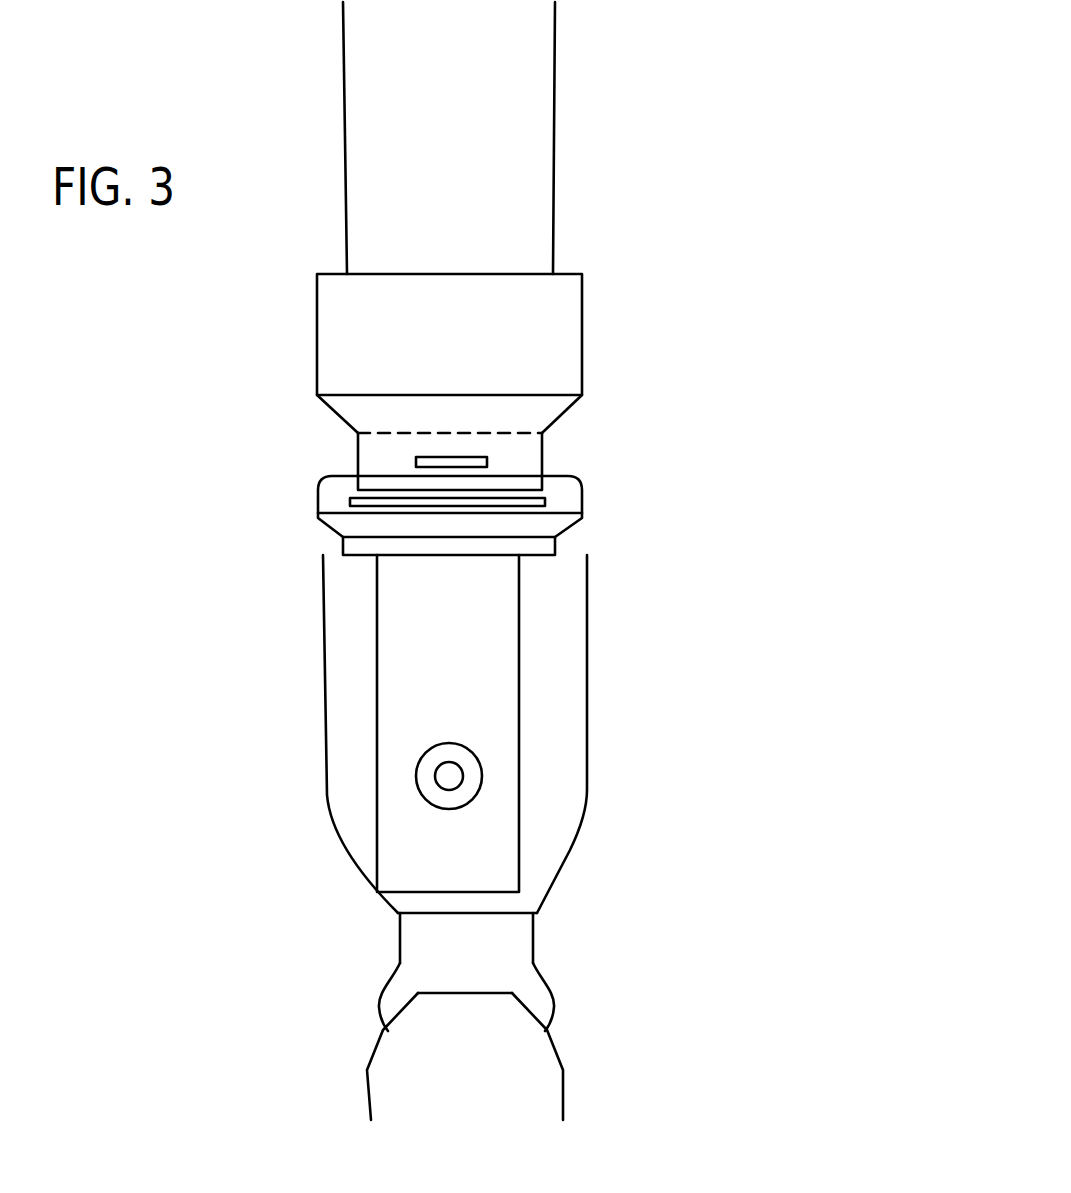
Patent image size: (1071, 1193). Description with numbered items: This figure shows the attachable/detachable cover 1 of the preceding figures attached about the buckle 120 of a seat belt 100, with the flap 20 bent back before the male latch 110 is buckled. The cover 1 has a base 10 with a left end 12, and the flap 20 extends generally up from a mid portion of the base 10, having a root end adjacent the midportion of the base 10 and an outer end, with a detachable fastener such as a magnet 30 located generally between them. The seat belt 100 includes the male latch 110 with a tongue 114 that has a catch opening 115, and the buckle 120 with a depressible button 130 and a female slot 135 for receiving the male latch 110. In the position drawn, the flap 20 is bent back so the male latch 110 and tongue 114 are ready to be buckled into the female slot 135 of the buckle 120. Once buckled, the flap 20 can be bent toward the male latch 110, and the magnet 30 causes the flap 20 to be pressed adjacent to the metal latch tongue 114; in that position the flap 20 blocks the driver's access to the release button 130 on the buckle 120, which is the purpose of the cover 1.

The attachable/detachable cover 1 is at (461, 753).
The base of cover 10 is at (342, 682).
The left end 12 is at (567, 678).
The flap 20 is at (497, 603).
The detachable fastener 30 is at (475, 773).
The seat belt 100 is at (608, 125).
The male latch 110 is at (570, 297).
The tongue 114 is at (545, 418).
The catch opening in tongue 115 is at (468, 462).
The buckle 120 is at (427, 941).
The depressible button 130 is at (533, 528).
The female slot for receiving male latch 135 is at (353, 507).